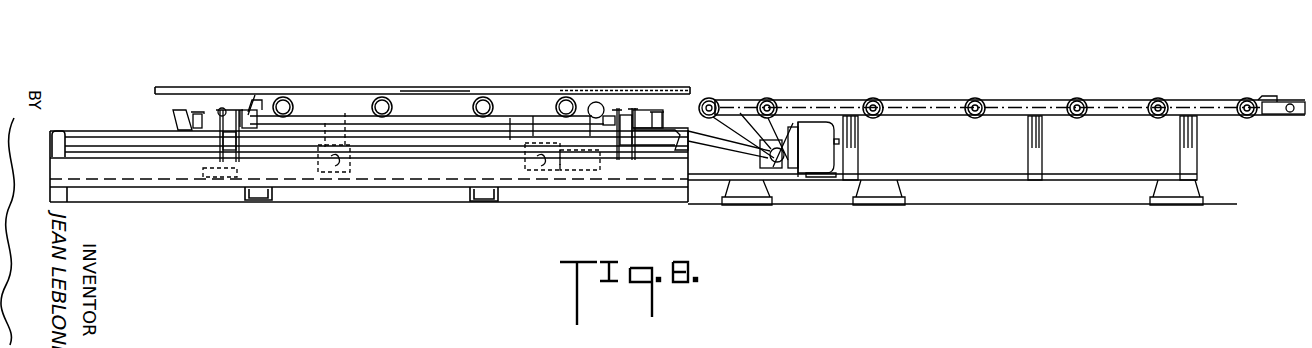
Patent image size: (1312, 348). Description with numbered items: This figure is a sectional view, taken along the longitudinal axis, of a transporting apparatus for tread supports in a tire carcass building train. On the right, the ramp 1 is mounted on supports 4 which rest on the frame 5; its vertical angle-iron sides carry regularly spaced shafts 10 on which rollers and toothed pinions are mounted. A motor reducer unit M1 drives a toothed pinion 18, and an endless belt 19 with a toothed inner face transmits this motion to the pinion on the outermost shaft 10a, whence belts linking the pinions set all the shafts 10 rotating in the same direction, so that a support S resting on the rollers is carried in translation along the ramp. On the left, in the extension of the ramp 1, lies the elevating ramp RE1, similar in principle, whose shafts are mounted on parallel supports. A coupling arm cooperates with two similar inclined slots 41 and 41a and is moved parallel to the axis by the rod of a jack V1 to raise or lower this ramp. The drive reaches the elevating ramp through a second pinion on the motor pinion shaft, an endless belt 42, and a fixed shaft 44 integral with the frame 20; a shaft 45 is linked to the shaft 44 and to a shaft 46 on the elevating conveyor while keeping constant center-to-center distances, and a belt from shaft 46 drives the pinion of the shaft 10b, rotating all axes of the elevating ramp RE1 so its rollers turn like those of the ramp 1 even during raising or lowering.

The ramp 1 is at (935, 88).
The supports 4 is at (1183, 145).
The frame 5 is at (1085, 205).
The shafts 10 is at (1152, 98).
The outermost shaft 10a is at (709, 98).
The shaft of the elevating ramp 10b is at (565, 97).
The toothed pinion 18 is at (772, 166).
The endless belt 19 is at (763, 125).
The frame 20 is at (600, 202).
The inclined slot 41 is at (530, 167).
The inclined slot 41a is at (340, 170).
The endless belt 42 is at (723, 158).
The fixed shaft 44 is at (660, 148).
The shaft 45 is at (607, 118).
The shaft 46 is at (600, 102).
The motor reducer unit M1 is at (835, 132).
The elevating ramp RE1 is at (433, 88).
The support S is at (340, 88).
The jack V1 is at (578, 167).